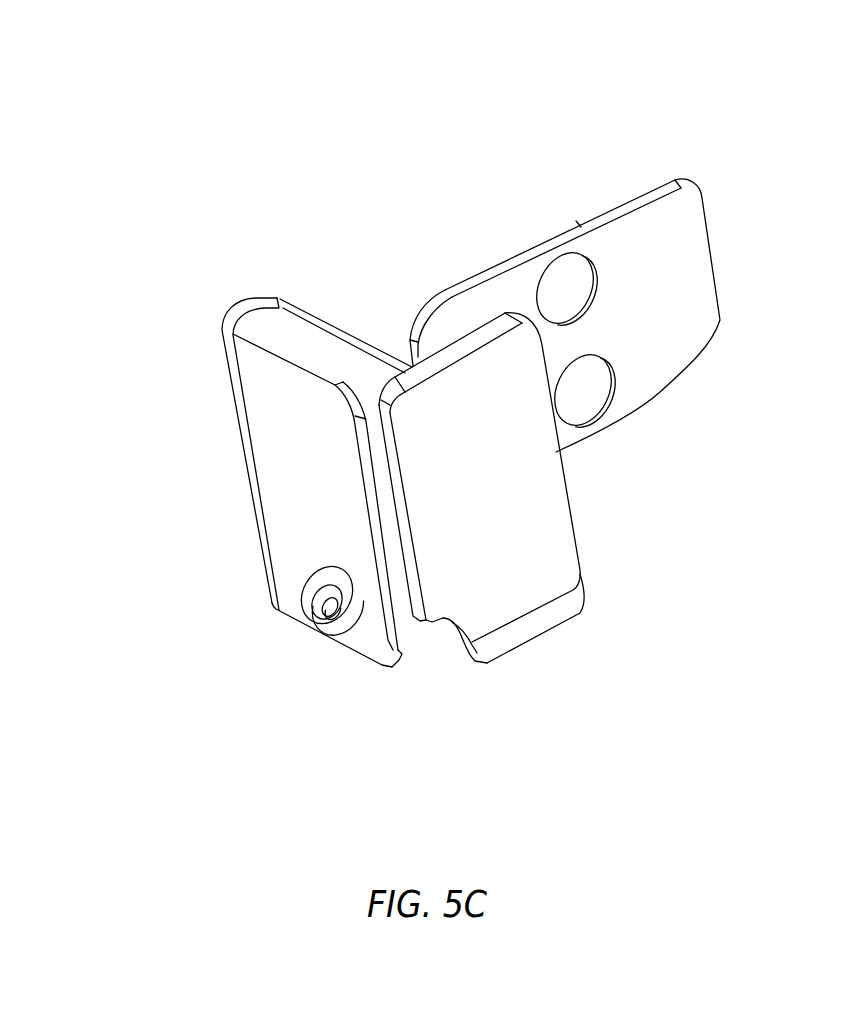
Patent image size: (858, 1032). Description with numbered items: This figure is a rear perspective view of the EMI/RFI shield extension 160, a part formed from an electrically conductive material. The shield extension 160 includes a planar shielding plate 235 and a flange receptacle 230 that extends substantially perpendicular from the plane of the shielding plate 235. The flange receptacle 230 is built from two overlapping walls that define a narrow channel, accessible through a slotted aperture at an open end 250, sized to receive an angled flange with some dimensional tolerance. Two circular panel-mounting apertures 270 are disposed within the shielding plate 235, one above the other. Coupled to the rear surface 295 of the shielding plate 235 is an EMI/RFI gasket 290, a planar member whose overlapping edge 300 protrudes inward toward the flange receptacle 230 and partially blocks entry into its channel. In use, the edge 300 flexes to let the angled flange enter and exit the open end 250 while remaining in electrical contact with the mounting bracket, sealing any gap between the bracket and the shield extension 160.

The EMI/RFI shield extension 160 is at (480, 95).
The flange receptacle 230 is at (197, 377).
The shielding plate 235 is at (520, 252).
The open end 250 is at (357, 372).
The panel-mounting apertures 270 is at (593, 278).
The EMI/RFI gasket 290 is at (473, 487).
The rear surface 295 is at (677, 217).
The overlapping edge 300 is at (441, 620).